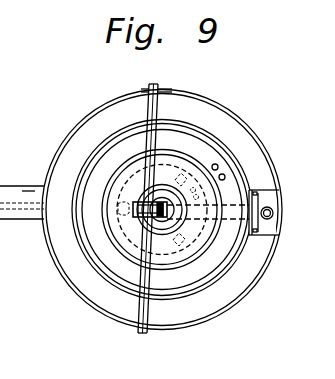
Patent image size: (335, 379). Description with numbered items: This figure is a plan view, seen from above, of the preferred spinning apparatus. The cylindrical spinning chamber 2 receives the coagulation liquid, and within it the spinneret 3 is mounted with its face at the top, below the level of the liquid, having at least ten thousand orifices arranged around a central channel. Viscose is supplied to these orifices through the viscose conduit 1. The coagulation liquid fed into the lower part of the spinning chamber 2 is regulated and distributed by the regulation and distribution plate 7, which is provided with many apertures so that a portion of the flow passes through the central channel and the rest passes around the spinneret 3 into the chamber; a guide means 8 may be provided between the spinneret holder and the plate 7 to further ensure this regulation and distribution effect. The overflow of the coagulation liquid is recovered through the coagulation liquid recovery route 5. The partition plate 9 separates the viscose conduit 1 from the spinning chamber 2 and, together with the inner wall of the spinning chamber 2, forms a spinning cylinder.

The viscose conduit 1 is at (273, 217).
The spinning chamber 2 is at (92, 267).
The spinneret 3 is at (178, 164).
The coagulation liquid recovery route 5 is at (17, 195).
The regulation and distribution plate 7 is at (210, 158).
The guide means 8 is at (191, 243).
The partition plate 9 is at (263, 204).